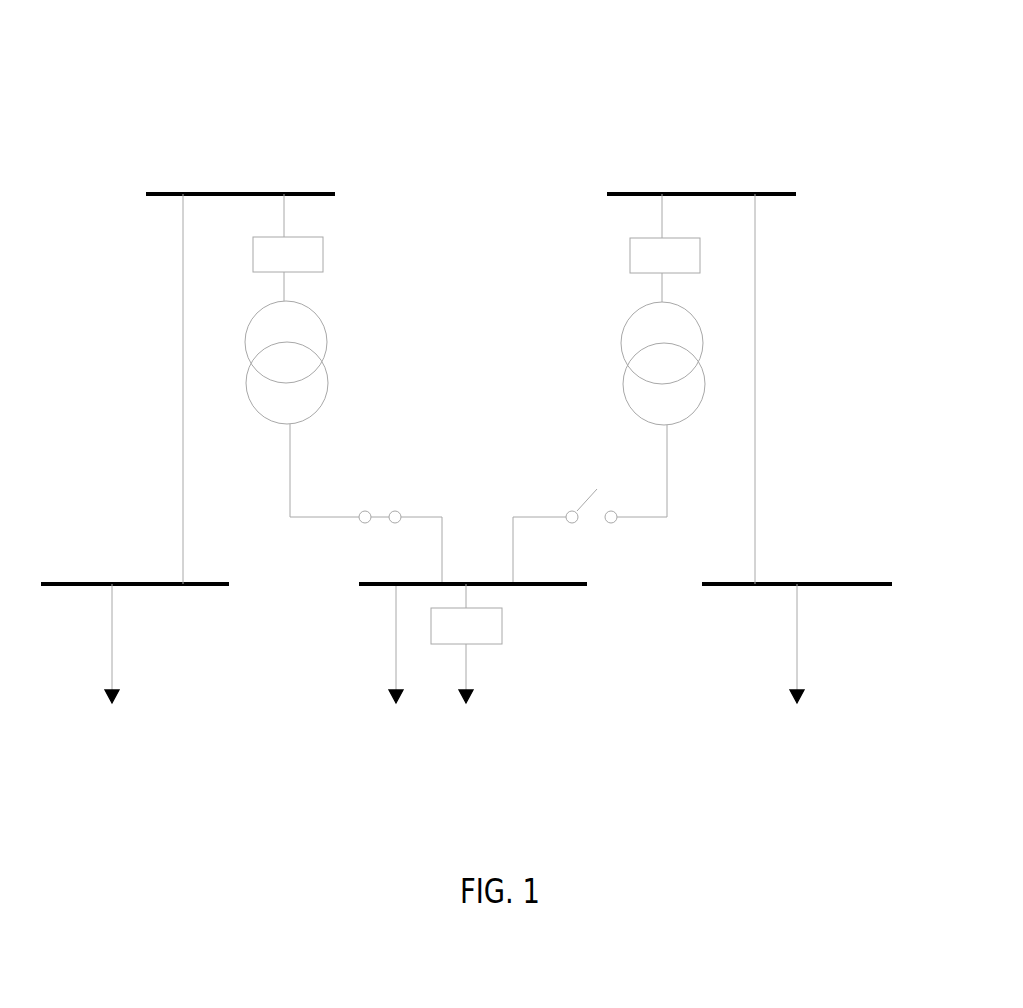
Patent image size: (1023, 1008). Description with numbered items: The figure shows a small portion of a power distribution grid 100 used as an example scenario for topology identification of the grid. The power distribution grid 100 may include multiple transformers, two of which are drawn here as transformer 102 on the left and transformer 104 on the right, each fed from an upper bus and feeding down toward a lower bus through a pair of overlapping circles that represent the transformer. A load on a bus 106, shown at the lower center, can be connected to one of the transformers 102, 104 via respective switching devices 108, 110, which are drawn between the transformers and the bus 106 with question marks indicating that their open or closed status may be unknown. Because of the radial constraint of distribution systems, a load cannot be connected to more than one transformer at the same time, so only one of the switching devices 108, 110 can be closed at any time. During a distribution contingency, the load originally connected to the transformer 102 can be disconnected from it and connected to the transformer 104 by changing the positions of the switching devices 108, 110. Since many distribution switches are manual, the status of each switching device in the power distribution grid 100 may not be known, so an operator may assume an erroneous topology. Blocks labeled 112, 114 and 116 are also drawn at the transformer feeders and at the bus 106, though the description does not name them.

The power distribution grid 100 is at (897, 96).
The transformer 102 is at (343, 351).
The transformer 104 is at (607, 368).
The bus 106 is at (549, 586).
The switching device 108 is at (396, 495).
The switching device 110 is at (569, 490).
The first intelligent electronic device 112 is at (303, 264).
The second intelligent electronic device 114 is at (681, 265).
The third intelligent electronic device 116 is at (482, 635).